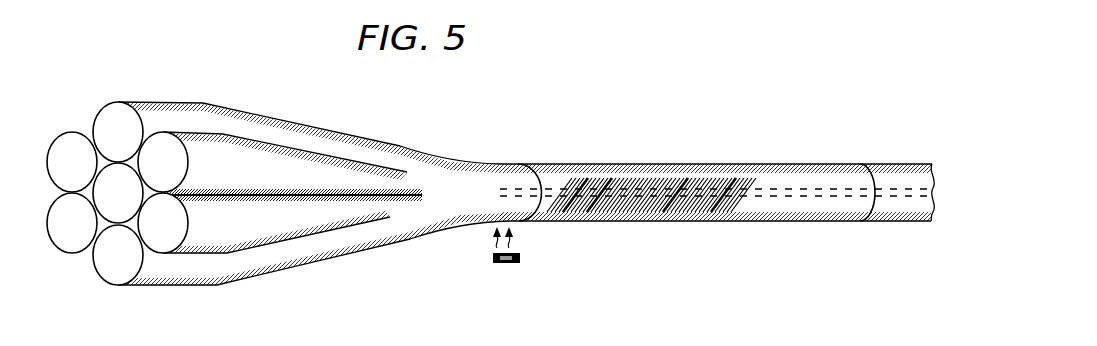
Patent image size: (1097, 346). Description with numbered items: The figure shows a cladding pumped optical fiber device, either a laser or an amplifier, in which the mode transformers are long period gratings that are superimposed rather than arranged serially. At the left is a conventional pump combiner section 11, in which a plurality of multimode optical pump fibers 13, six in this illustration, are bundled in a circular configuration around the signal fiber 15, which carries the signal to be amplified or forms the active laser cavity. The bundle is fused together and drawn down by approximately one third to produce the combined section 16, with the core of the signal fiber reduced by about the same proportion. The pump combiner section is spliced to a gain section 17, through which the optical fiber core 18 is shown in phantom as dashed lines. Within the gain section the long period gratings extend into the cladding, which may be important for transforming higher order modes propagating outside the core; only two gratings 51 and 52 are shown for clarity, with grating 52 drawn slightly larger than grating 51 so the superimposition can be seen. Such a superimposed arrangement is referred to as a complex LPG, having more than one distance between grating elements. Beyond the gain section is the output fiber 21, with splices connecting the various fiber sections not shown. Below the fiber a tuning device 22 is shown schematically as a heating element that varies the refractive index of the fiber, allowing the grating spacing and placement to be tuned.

The pump combiner section 11 is at (366, 139).
The multimode optical pump fibers 13 is at (97, 116).
The signal fiber 15 is at (132, 207).
The combined section 16 is at (520, 164).
The gain section 17 is at (658, 164).
The optical fiber core 18 is at (503, 190).
The output fiber 21 is at (894, 164).
The tuning device 22 is at (497, 265).
The grating 51 is at (613, 200).
The grating 52 is at (720, 208).